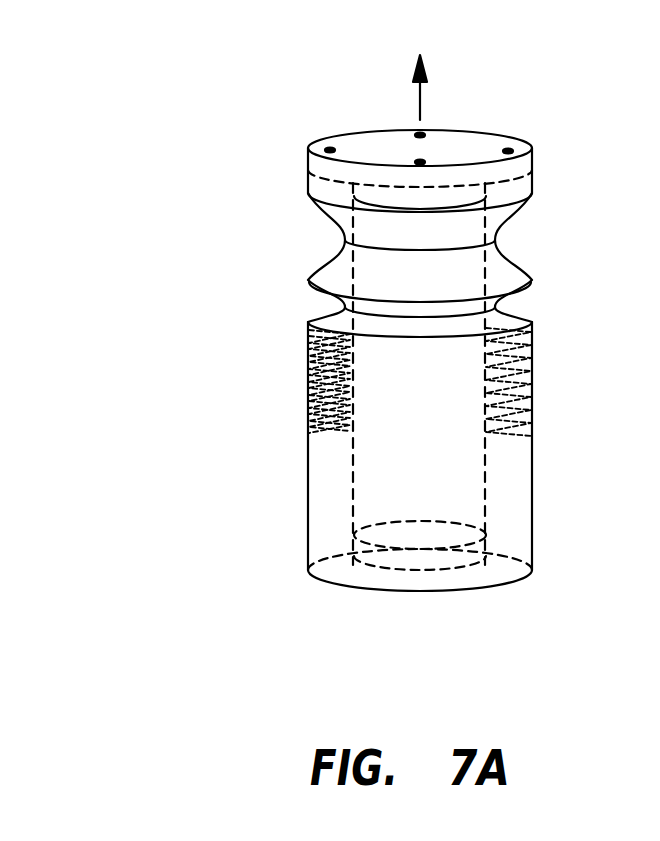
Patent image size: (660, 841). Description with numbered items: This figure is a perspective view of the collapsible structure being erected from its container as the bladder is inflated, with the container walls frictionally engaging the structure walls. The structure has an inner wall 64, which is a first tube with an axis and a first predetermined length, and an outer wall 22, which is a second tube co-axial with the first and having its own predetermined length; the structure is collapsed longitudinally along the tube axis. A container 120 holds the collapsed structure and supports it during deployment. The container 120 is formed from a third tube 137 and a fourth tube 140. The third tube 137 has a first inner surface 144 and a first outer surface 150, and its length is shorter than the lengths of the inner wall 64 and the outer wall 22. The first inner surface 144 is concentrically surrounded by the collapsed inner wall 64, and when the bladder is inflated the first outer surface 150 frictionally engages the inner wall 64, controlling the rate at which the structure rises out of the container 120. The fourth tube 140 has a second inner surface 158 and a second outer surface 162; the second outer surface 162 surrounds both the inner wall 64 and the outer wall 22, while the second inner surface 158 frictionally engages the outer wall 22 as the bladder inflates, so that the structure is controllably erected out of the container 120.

The outer wall 22 is at (312, 348).
The inner wall 64 is at (338, 377).
The container 120 is at (302, 520).
The third tube 137 is at (485, 477).
The fourth tube 140 is at (533, 498).
The first inner surface 144 is at (353, 485).
The first outer surface 150 is at (340, 483).
The second inner surface 158 is at (310, 517).
The second outer surface 162 is at (533, 380).